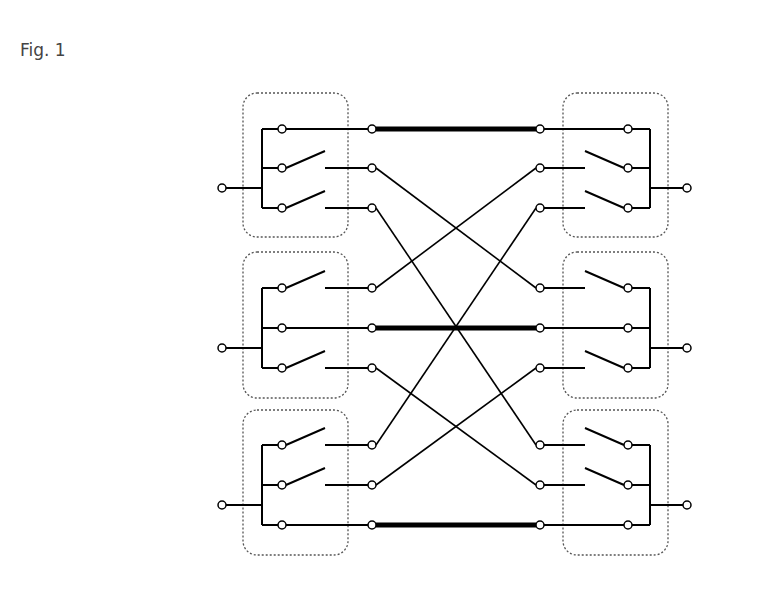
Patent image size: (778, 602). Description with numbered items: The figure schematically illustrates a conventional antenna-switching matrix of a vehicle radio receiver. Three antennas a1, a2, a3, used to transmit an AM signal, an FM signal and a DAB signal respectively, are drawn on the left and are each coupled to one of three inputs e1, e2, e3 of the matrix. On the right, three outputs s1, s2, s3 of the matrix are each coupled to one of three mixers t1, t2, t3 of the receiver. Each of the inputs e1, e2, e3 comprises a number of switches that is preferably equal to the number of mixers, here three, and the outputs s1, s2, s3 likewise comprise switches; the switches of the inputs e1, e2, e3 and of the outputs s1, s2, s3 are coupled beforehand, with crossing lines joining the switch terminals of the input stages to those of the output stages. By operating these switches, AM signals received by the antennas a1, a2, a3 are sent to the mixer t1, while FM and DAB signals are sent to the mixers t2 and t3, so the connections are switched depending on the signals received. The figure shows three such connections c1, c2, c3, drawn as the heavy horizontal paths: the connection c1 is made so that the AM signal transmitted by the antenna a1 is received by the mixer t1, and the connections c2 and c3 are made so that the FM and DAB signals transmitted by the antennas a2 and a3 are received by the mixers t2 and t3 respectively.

The input e1 is at (243, 130).
The input e2 is at (243, 290).
The input e3 is at (243, 448).
The output s1 is at (668, 144).
The output s2 is at (668, 290).
The output s3 is at (668, 450).
The antenna a1 is at (218, 188).
The antenna a2 is at (218, 348).
The antenna a3 is at (218, 505).
The mixer t1 is at (691, 188).
The mixer t2 is at (691, 348).
The mixer t3 is at (691, 505).
The connection c1 is at (445, 127).
The connection c2 is at (479, 325).
The connection c3 is at (415, 529).